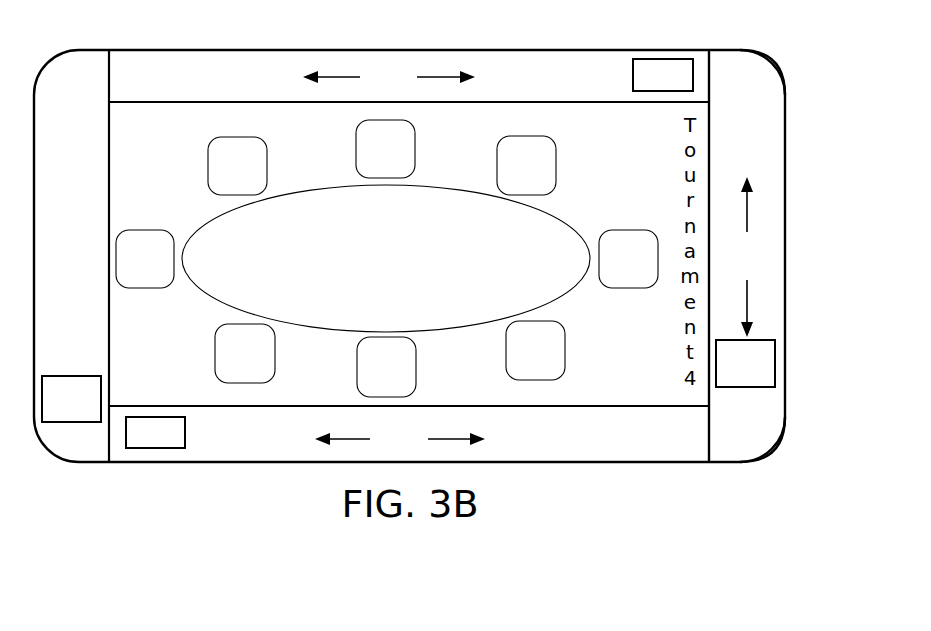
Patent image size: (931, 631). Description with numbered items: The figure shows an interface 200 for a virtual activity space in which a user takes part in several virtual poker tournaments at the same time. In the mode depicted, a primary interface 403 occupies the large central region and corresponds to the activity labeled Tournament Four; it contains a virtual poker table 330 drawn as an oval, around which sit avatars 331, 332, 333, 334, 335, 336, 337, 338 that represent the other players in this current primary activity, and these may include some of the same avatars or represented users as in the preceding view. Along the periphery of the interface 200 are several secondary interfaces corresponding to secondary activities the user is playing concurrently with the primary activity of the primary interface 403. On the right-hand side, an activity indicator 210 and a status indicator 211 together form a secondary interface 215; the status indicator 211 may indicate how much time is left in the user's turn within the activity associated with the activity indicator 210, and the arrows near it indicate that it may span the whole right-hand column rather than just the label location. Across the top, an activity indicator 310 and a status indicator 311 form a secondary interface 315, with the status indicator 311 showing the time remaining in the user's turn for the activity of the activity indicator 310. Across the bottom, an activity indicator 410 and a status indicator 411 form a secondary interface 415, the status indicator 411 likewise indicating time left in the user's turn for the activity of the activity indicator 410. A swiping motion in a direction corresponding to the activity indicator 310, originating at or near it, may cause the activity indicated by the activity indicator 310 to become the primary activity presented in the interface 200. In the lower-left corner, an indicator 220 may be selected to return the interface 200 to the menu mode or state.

The interface 200 is at (120, 49).
The activity indicator 210 is at (745, 363).
The status indicator 211 is at (746, 257).
The secondary interface 215 is at (782, 42).
The indicator 220 is at (71, 399).
The activity indicator 310 is at (663, 75).
The status indicator 311 is at (389, 77).
The secondary interface 315 is at (795, 40).
The virtual poker table 330 is at (386, 258).
The avatar 331 is at (385, 149).
The avatar 332 is at (526, 165).
The avatar 333 is at (628, 259).
The avatar 334 is at (535, 350).
The avatar 335 is at (386, 367).
The avatar 336 is at (245, 353).
The avatar 337 is at (145, 259).
The avatar 338 is at (237, 166).
The primary interface 403 is at (184, 150).
The activity indicator 410 is at (155, 432).
The status indicator 411 is at (400, 439).
The secondary interface 415 is at (792, 392).